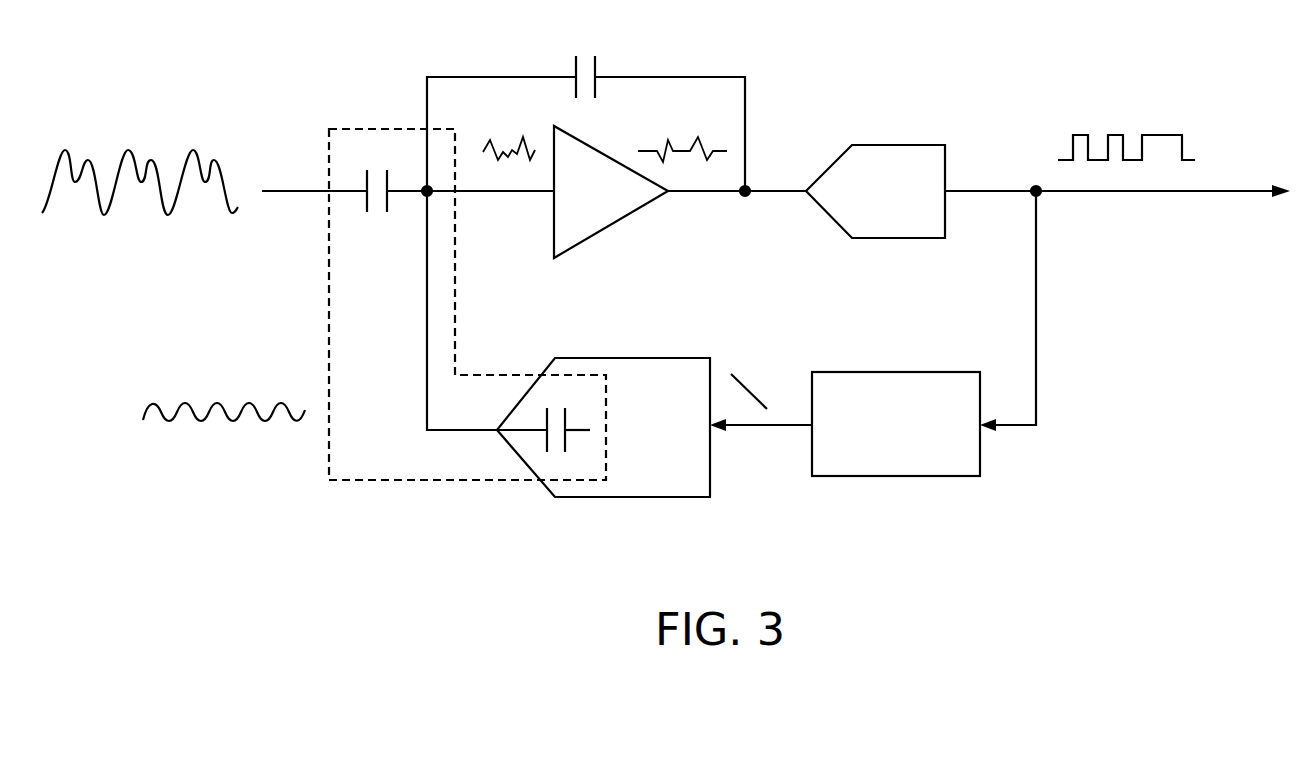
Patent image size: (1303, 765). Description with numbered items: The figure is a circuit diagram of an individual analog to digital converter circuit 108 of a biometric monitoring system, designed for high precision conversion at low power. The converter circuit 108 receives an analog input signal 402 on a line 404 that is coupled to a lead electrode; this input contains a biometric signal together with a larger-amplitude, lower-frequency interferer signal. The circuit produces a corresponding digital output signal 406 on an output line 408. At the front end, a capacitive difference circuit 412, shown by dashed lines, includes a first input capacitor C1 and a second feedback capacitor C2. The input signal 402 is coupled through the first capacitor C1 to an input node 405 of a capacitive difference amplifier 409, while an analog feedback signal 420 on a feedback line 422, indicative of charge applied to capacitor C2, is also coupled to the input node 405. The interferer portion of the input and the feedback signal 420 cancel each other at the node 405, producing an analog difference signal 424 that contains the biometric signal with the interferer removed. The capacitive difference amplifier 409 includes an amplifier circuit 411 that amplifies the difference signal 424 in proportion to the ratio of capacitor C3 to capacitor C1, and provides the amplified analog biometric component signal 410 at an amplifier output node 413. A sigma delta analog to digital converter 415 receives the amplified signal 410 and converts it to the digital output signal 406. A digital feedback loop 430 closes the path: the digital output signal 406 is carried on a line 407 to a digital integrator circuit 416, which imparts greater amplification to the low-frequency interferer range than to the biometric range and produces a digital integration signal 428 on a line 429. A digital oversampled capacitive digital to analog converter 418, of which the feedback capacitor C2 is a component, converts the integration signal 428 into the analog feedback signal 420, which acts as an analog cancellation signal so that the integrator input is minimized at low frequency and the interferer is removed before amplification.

The analog to digital converter circuit 108 is at (940, 77).
The analog input signal 402 is at (130, 150).
The line 404 is at (293, 190).
The input node 405 is at (425, 186).
The digital output signal 406 is at (1156, 135).
The line 407 is at (1036, 318).
The output line 408 is at (1222, 191).
The capacitive difference amplifier 409 is at (590, 98).
The amplified analog biometric component signal 410 is at (663, 148).
The amplifier circuit 411 is at (582, 140).
The capacitive difference circuit 412 is at (329, 278).
The amplifier output node 413 is at (750, 186).
The sigma delta analog to digital converter 415 is at (893, 145).
The digital integrator circuit 416 is at (927, 477).
The digital oversampled capacitive digital to analog converter 418 is at (603, 448).
The analog feedback signal 420 is at (228, 402).
The feedback line 422 is at (427, 318).
The analog difference signal 424 is at (505, 150).
The digital integration signal 428 is at (745, 385).
The line 429 is at (755, 430).
The digital feedback loop 430 is at (915, 340).
The first input capacitor C1 is at (375, 179).
The second feedback capacitor C2 is at (543, 418).
The capacitor C3 is at (586, 66).